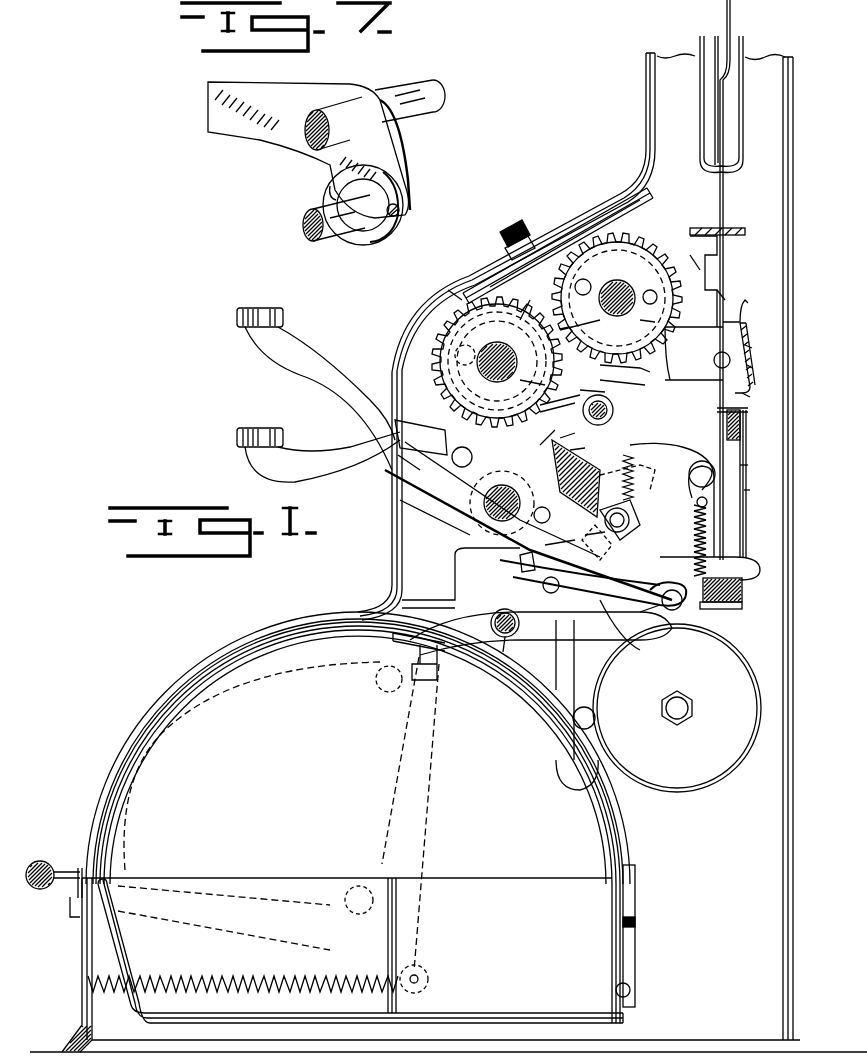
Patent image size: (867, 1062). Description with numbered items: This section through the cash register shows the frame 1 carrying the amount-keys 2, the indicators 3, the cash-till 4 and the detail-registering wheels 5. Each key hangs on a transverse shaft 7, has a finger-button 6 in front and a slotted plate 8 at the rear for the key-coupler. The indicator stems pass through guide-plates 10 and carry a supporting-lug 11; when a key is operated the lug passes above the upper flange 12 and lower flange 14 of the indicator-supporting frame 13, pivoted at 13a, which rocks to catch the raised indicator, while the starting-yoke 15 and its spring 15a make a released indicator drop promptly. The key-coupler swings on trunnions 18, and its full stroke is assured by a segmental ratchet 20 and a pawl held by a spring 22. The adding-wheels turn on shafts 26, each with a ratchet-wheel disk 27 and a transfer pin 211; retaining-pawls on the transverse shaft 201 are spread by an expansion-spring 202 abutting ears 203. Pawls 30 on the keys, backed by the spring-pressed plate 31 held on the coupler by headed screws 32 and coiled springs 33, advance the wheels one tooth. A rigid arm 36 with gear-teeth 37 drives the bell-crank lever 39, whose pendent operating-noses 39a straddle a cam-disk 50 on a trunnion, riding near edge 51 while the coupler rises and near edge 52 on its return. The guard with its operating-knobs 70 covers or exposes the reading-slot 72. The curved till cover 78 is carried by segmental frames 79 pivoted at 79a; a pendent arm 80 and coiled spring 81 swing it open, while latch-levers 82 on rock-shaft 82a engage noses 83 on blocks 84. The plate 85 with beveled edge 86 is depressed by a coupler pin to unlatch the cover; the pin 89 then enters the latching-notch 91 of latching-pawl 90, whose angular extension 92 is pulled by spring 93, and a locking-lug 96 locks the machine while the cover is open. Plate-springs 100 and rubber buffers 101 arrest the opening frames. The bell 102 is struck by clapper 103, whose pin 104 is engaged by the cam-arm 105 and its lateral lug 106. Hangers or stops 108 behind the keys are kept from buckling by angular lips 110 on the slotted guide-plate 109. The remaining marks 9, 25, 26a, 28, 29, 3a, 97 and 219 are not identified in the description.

In FIG. 1, the frame 1 is at (435, 570).
In FIG. 1, the amount-keys 2 is at (335, 395).
In FIG. 1, the indicators 3 is at (700, 113).
In FIG. 1, the cash-till 4 is at (448, 965).
In FIG. 1, the detail-registering wheels 5 is at (528, 302).
In FIG. 1, the finger-button 6 is at (283, 316).
In FIG. 1, the transverse shaft 7 is at (488, 500).
In FIG. 1, the slotted plate 8 is at (640, 508).
In FIG. 1, the knob 9 is at (54, 889).
In FIG. 1, the guide-plates 10 is at (735, 222).
In FIG. 1, the supporting-lug 11 is at (740, 308).
In FIG. 1, the upper flange 12 is at (752, 330).
In FIG. 1, the indicator-supporting frame 13 is at (752, 350).
In FIG. 1, the pivot of supporting-frame arms 13a is at (752, 370).
In FIG. 1, the lower flange 14 is at (752, 399).
In FIG. 1, the starting-yoke 15 is at (730, 285).
In FIG. 1, the spring 15a is at (688, 263).
In FIG. 7, the trunnions 18 is at (320, 240).
In FIG. 1, the segmental ratchet 20 is at (630, 450).
In FIG. 1, the spring 22 is at (708, 515).
In FIG. 1, the pin 25 is at (642, 326).
In FIG. 7, the shaft 26 is at (420, 125).
In FIG. 1, the shaft 26 is at (561, 355).
In FIG. 1, the pin 26a is at (465, 355).
In FIG. 1, the ratchet-wheel disk 27 is at (640, 245).
In FIG. 1, the gear 28 is at (497, 342).
In FIG. 1, the shaft 29 is at (520, 355).
In FIG. 1, the pawls 30 is at (560, 448).
In FIG. 1, the spring-pressed plate 31 is at (586, 444).
In FIG. 1, the headed screws 32 is at (575, 429).
In FIG. 1, the coiled springs 33 is at (590, 460).
In FIG. 1, the rigid arm 36 is at (697, 353).
In FIG. 1, the gear-teeth 37 is at (633, 391).
In FIG. 7, the bell-crank lever 39 is at (309, 150).
In FIG. 7, the operating-noses 39a is at (330, 193).
In FIG. 1, the link 3a is at (557, 427).
In FIG. 7, the cam-disk 50 is at (360, 245).
In FIG. 7, the edge of cam periphery 51 is at (382, 240).
In FIG. 7, the edge of cam periphery 52 is at (400, 212).
In FIG. 1, the operating-knobs 70 is at (528, 210).
In FIG. 1, the reading-slot 72 is at (480, 283).
In FIG. 1, the curved cover 78 is at (205, 672).
In FIG. 1, the segmental frames 79 is at (425, 803).
In FIG. 1, the pivot of segmental frames 79a is at (357, 886).
In FIG. 1, the pendent arm 80 is at (418, 968).
In FIG. 1, the coiled spring 81 is at (228, 974).
In FIG. 1, the latch-levers 82 is at (532, 632).
In FIG. 1, the rock-shaft 82a is at (515, 652).
In FIG. 1, the noses 83 is at (440, 672).
In FIG. 1, the blocks 84 is at (410, 814).
In FIG. 1, the vertical extension plate 85 is at (645, 578).
In FIG. 1, the beveled edge 86 is at (640, 470).
In FIG. 1, the pin 89 is at (625, 615).
In FIG. 1, the latching-pawl 90 is at (545, 590).
In FIG. 1, the latching-notch 91 is at (575, 640).
In FIG. 1, the angular extension 92 is at (517, 568).
In FIG. 1, the coiled spring 93 is at (560, 541).
In FIG. 1, the locking-lug 96 is at (668, 558).
In FIG. 1, the pin 97 is at (595, 531).
In FIG. 1, the plate-springs 100 is at (635, 886).
In FIG. 1, the rubber buffers 101 is at (380, 690).
In FIG. 1, the bell 102 is at (677, 708).
In FIG. 1, the clapper 103 is at (672, 612).
In FIG. 1, the pin 104 is at (528, 521).
In FIG. 1, the cam-arm 105 is at (421, 428).
In FIG. 1, the lateral lug 106 is at (402, 461).
In FIG. 1, the hangers or stops 108 is at (748, 468).
In FIG. 1, the slotted guide-plate 109 is at (750, 492).
In FIG. 1, the angular lips 110 is at (742, 560).
In FIG. 1, the transverse shaft 201 is at (613, 412).
In FIG. 1, the expansion-spring 202 is at (609, 397).
In FIG. 1, the ears 203 is at (567, 390).
In FIG. 1, the transfer pin 211 is at (448, 290).
In FIG. 1, the arm 219 is at (690, 455).